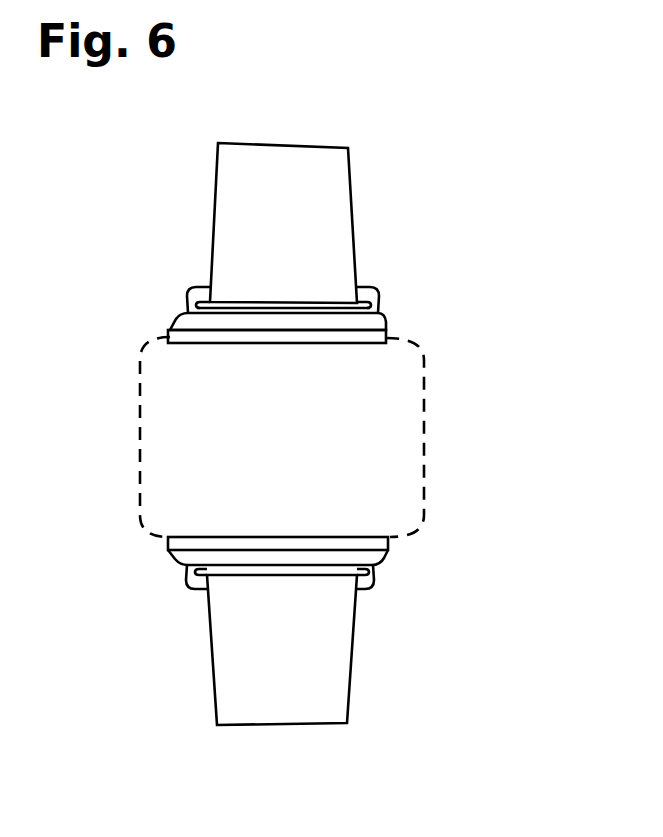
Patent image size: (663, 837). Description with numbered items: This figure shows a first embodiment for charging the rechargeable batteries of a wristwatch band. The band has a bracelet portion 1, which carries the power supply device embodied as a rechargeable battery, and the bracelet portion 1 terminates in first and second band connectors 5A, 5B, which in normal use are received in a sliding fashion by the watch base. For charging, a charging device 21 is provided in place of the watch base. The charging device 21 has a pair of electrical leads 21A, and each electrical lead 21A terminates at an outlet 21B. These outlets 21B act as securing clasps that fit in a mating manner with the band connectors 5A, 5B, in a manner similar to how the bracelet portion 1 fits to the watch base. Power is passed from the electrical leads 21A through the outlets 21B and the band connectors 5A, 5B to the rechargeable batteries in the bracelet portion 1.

The bracelet portion 1 is at (322, 223).
The first band connector 5A is at (363, 322).
The second band connector 5B is at (367, 556).
The charging device 21 is at (447, 377).
The electrical lead 21A is at (322, 345).
The outlet 21B is at (266, 341).